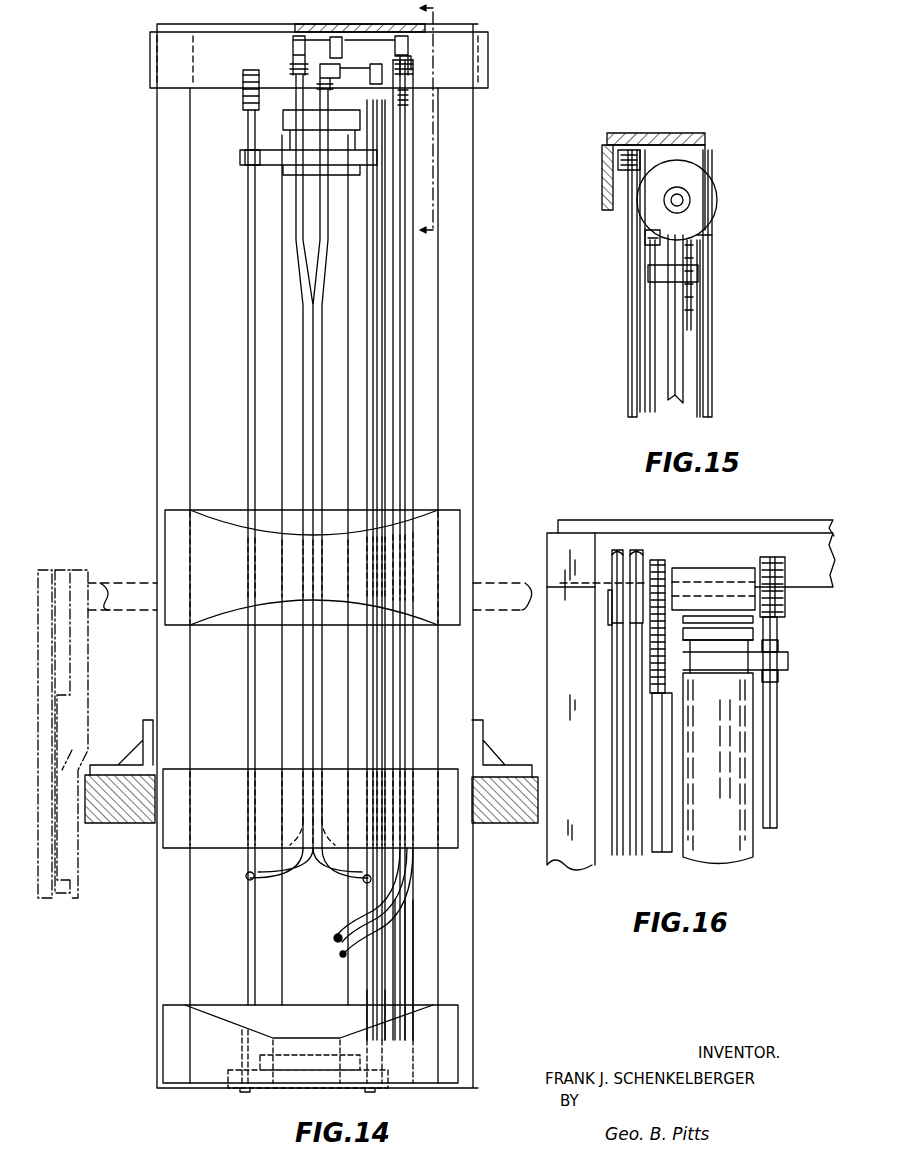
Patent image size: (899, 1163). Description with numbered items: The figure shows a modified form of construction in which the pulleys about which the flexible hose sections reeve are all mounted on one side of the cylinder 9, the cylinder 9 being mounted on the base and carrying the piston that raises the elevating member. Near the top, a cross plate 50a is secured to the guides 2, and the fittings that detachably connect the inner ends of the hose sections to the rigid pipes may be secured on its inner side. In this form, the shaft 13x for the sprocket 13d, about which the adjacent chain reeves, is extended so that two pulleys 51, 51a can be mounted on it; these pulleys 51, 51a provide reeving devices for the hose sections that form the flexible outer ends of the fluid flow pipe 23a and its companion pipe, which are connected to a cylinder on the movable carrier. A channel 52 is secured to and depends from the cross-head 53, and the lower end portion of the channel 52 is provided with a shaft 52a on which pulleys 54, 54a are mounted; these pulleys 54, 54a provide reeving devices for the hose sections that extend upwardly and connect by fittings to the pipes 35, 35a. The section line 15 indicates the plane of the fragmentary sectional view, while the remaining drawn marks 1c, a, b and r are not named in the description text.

In FIG. 14, the cross plate 50a is at (488, 72).
In FIG. 15, the cross plate 50a is at (600, 182).
In FIG. 14, the pulleys 15 is at (441, 122).
In FIG. 14, the frame bracket 1c is at (498, 710).
In FIG. 14, the sprocket 13d is at (383, 92).
In FIG. 15, the sprocket 13d is at (692, 265).
In FIG. 16, the sprocket 13d is at (668, 665).
In FIG. 15, the shaft 13x is at (682, 198).
In FIG. 16, the shaft 13x is at (612, 600).
In FIG. 14, the cross-head 53 is at (270, 82).
In FIG. 16, the cross-head 53 is at (727, 568).
In FIG. 15, the strip b is at (622, 305).
In FIG. 15, the strip a is at (640, 228).
In FIG. 15, the rail r is at (712, 248).
In FIG. 15, the channel 52 is at (670, 375).
In FIG. 16, the channel 52 is at (665, 723).
In FIG. 14, the shaft 52a is at (380, 1010).
In FIG. 14, the cylinder 9 is at (285, 945).
In FIG. 15, the cylinder 9 is at (710, 376).
In FIG. 16, the cylinder 9 is at (750, 845).
In FIG. 14, the fluid flow pipe 23a is at (342, 954).
In FIG. 14, the fluid flow pipe 35 is at (258, 880).
In FIG. 14, the fluid flow pipe 35a is at (330, 860).
In FIG. 14, the pulley 54 is at (380, 980).
In FIG. 14, the pulley 54a is at (415, 970).
In FIG. 16, the pulley 51 is at (640, 560).
In FIG. 16, the pulley 51a is at (612, 625).
In FIG. 16, the guides 2 is at (575, 870).